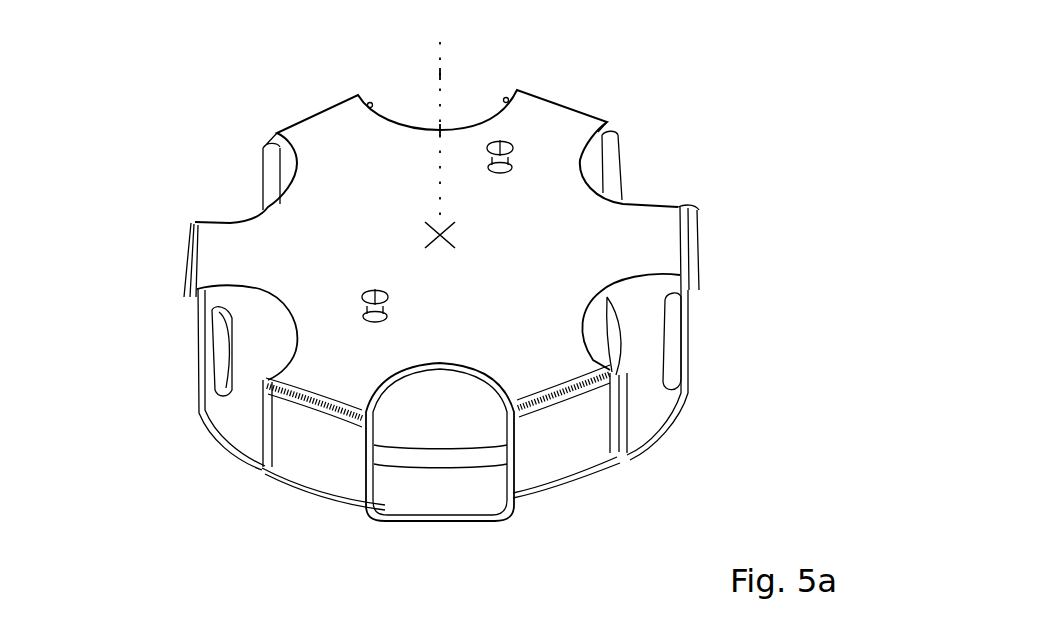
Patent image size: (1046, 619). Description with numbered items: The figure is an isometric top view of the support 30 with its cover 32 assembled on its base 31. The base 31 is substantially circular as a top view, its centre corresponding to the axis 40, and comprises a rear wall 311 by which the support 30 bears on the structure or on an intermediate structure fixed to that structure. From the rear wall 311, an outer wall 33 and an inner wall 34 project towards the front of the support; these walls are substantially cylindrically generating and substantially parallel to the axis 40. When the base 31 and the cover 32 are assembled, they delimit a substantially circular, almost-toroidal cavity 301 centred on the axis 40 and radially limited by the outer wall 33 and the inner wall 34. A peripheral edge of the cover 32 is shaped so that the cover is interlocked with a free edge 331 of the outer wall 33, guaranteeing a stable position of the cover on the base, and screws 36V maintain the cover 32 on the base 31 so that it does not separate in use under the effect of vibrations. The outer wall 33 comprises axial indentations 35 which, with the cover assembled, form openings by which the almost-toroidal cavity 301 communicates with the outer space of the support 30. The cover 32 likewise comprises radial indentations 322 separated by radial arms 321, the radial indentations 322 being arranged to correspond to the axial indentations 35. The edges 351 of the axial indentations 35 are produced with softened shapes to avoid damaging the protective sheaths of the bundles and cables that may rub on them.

The support 30 is at (192, 112).
The cover 32 is at (582, 107).
The radial arms 321 is at (332, 138).
The radial indentations 322 is at (423, 110).
The axis 40 is at (441, 73).
The screws 36V is at (512, 160).
The axial indentations 35 is at (243, 378).
The edges 351 is at (197, 338).
The free edge 331 is at (686, 283).
The almost-toroidal cavity 301 is at (647, 333).
The base 31 is at (317, 493).
The outer wall 33 is at (540, 458).
The inner wall 34 is at (440, 442).
The rear wall 311 is at (440, 484).